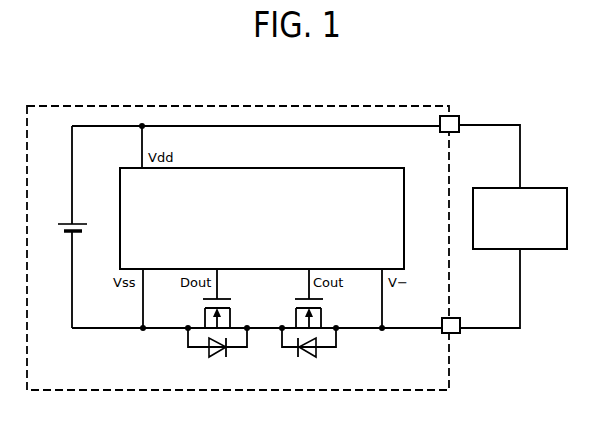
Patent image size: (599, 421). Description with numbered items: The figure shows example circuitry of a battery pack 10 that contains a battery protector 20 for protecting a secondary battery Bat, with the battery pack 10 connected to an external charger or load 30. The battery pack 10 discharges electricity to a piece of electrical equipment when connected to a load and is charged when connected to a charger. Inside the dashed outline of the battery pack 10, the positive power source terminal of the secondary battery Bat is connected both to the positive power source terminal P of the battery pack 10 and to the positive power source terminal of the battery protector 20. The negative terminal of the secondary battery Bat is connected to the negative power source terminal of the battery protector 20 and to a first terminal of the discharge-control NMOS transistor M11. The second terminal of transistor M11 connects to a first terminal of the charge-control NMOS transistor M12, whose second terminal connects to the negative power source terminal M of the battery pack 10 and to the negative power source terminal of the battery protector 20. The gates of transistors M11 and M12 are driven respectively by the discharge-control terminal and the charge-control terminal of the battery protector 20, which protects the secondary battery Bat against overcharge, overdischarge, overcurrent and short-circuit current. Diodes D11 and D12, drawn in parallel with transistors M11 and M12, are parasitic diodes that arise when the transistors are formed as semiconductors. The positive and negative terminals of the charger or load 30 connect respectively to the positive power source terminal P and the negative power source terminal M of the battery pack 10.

The battery pack 10 is at (301, 106).
The battery protector 20 is at (363, 168).
The charger or load 30 is at (539, 188).
The positive power source terminal P is at (455, 116).
The negative power source terminal M is at (455, 333).
The secondary battery Bat is at (79, 227).
The discharge-control NMOS transistor M11 is at (200, 313).
The charge-control NMOS transistor M12 is at (325, 313).
The diode D11 is at (217, 353).
The diode D12 is at (309, 353).